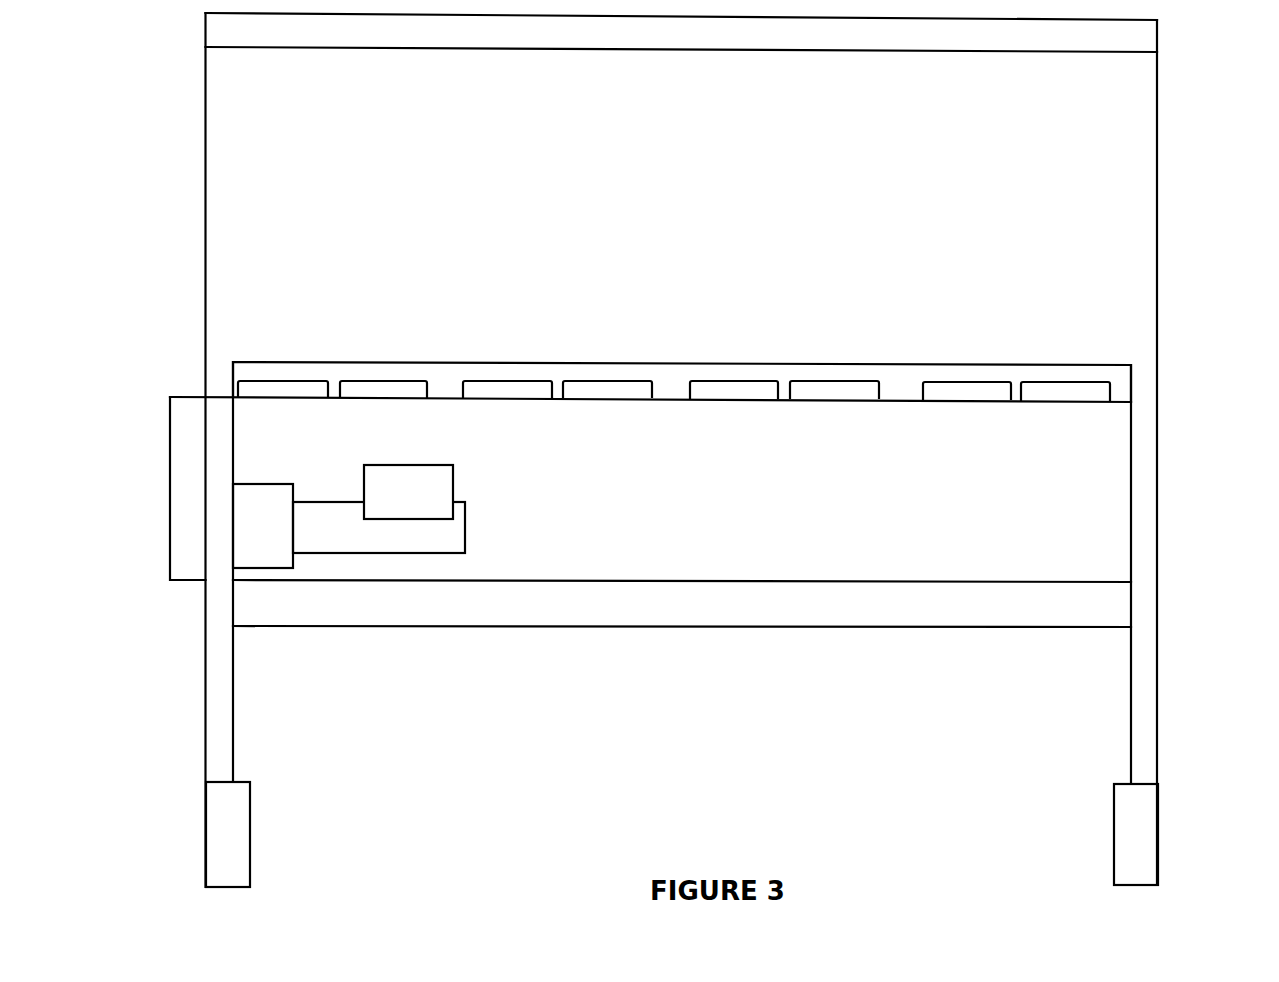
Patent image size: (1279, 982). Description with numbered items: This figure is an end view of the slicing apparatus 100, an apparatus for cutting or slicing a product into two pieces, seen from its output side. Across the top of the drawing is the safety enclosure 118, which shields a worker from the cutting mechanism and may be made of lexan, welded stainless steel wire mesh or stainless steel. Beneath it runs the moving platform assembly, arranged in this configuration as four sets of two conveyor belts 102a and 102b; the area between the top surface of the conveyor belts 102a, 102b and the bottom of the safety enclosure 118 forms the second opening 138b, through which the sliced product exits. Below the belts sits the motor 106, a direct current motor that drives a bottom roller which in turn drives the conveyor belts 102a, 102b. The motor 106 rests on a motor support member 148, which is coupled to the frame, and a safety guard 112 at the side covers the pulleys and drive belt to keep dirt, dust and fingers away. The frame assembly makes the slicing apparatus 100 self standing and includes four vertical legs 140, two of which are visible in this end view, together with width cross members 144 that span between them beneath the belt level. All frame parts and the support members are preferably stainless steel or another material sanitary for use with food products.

The slicing apparatus 100 is at (162, 51).
The safety enclosure 118 is at (1203, 452).
The conveyor belt 102a is at (228, 364).
The conveyor belt 102b is at (416, 359).
The second opening 138b is at (682, 364).
The safety guard 112 is at (146, 488).
The motor support member 148 is at (293, 502).
The motor 106 is at (402, 485).
The width cross member 144 is at (650, 512).
The vertical leg 140 is at (729, 624).